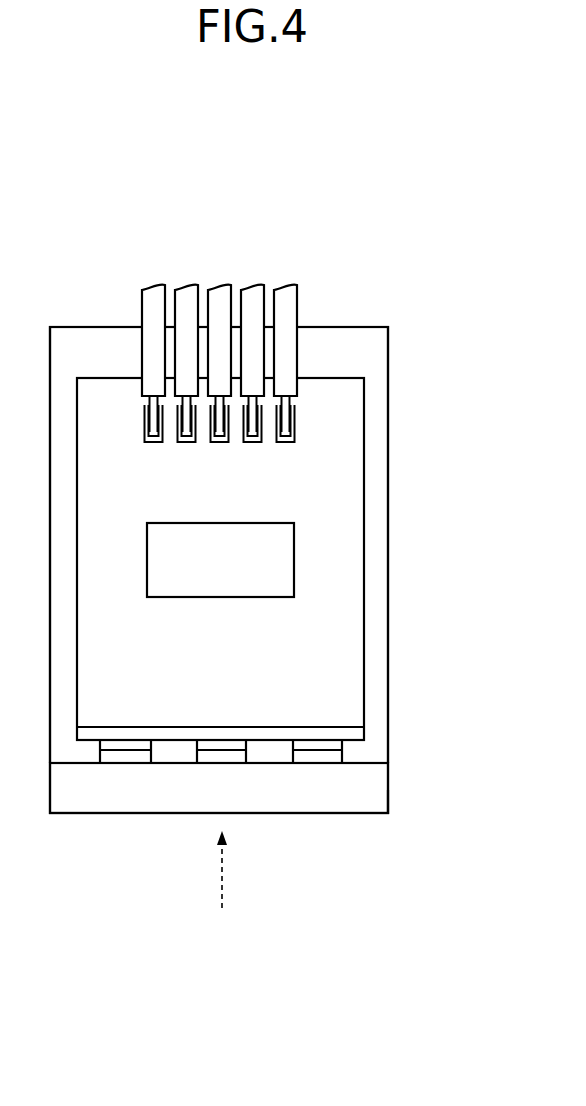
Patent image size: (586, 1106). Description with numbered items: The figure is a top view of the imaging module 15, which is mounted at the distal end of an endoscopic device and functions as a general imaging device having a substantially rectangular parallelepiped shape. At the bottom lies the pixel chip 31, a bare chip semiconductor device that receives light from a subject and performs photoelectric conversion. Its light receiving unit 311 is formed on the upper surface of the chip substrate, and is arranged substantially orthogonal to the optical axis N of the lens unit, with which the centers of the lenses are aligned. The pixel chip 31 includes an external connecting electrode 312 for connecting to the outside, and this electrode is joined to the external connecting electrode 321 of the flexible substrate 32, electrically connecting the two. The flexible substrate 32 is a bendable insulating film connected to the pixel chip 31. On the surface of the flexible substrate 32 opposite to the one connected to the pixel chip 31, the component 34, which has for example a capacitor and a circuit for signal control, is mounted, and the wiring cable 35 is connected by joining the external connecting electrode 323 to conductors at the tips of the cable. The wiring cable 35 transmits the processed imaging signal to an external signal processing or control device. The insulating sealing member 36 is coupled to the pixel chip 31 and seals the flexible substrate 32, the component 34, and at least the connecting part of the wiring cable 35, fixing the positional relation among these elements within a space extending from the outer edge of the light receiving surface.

The imaging module 15 is at (73, 230).
The pixel chip 31 is at (370, 790).
The light receiving unit 311 is at (343, 813).
The external connecting electrode 312 is at (335, 753).
The flexible substrate 32 is at (342, 637).
The external connecting electrode 321 is at (335, 745).
The external connecting electrode 323 is at (286, 442).
The component 34 is at (283, 557).
The wiring cable 35 is at (290, 300).
The insulating sealing member 36 is at (375, 340).
The axis N is at (226, 888).